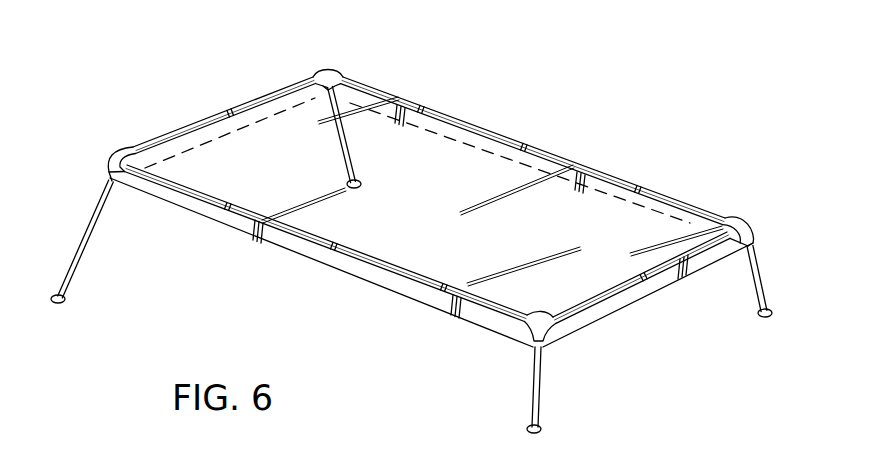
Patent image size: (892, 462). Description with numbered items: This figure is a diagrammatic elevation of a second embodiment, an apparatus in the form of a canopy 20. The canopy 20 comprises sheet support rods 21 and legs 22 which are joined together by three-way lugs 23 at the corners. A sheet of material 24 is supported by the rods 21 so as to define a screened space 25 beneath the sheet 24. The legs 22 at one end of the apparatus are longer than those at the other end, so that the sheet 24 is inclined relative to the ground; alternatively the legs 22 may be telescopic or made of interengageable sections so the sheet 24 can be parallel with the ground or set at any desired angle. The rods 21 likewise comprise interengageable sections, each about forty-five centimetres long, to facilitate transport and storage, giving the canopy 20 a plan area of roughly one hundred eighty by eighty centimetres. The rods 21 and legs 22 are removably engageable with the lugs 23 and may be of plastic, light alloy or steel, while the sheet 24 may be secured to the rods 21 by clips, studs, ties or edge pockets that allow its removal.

The canopy 20 is at (594, 156).
The sheet support rods 21 is at (380, 268).
The legs 22 is at (83, 250).
The three-way lugs 23 is at (329, 73).
The sheet of material 24 is at (434, 191).
The screened space 25 is at (458, 348).